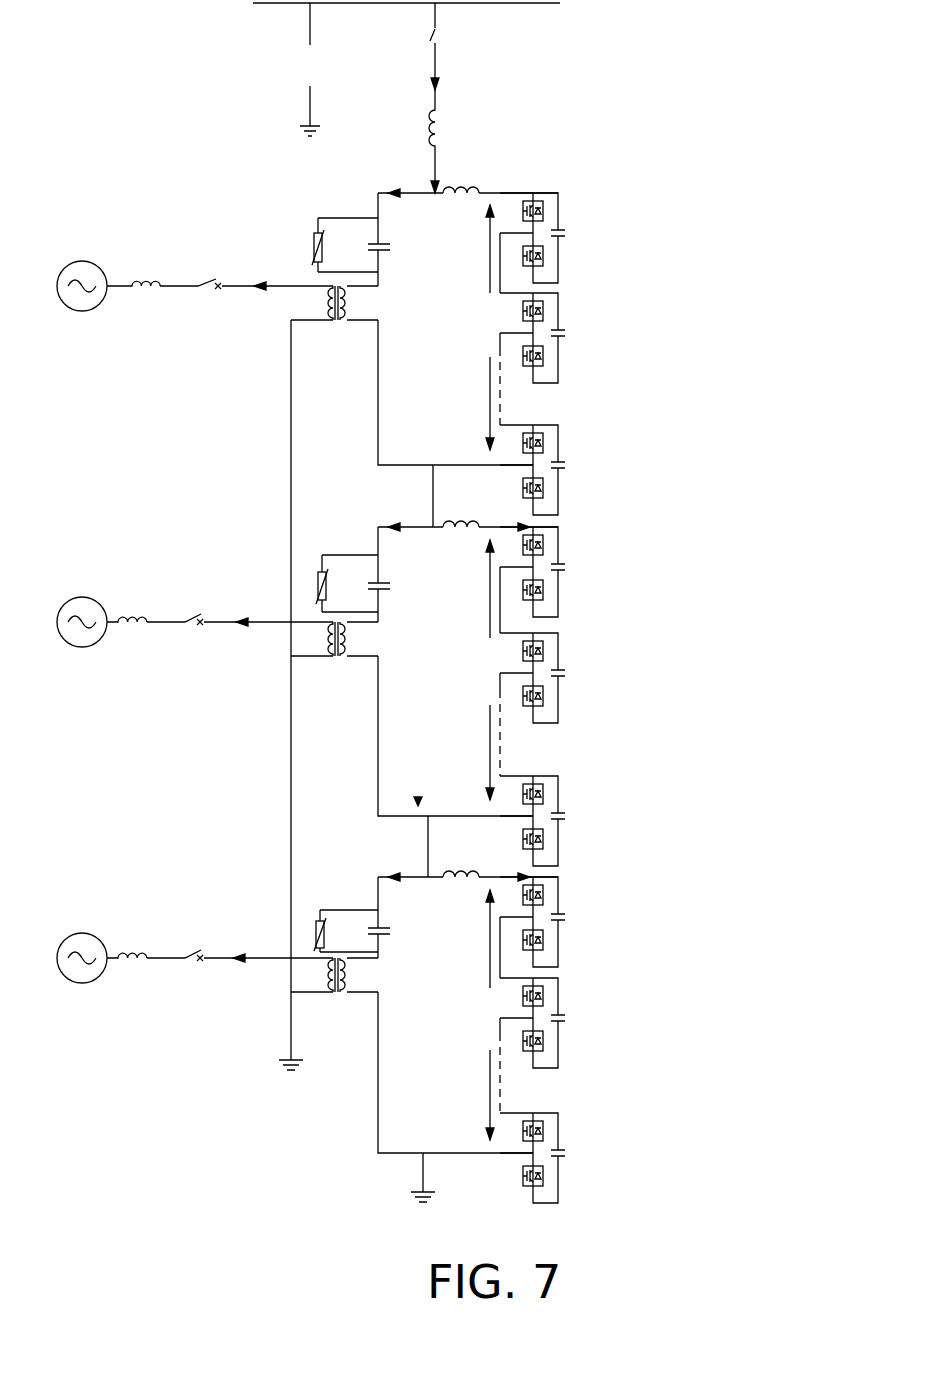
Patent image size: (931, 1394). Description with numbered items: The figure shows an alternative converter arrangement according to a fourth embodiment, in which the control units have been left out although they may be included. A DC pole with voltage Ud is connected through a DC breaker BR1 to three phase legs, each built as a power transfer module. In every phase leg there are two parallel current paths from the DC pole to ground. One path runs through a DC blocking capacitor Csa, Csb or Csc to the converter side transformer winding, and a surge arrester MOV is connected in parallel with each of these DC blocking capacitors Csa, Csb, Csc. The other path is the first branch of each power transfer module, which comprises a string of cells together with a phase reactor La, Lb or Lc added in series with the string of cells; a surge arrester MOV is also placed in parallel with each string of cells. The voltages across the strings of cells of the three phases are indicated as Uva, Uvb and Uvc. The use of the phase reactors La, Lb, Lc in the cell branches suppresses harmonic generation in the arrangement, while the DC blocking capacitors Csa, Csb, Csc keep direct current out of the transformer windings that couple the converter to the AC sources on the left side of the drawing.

The DC voltage source Ud is at (315, 69).
The DC breaker BR1 is at (480, 98).
The reactor La is at (449, 215).
The reactor Lb is at (454, 551).
The reactor Lc is at (454, 901).
The DC blocking capacitor Csa is at (354, 249).
The DC blocking capacitor Csb is at (356, 586).
The DC blocking capacitor Csc is at (355, 935).
The surge arrester MOV is at (315, 923).
The phase A arm voltage Uva is at (508, 327).
The phase B arm voltage Uvb is at (508, 670).
The phase C arm voltage Uvc is at (508, 1015).